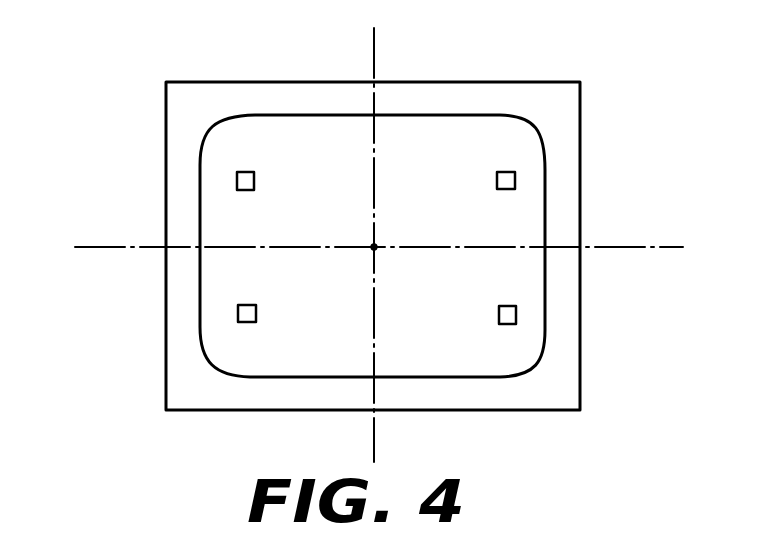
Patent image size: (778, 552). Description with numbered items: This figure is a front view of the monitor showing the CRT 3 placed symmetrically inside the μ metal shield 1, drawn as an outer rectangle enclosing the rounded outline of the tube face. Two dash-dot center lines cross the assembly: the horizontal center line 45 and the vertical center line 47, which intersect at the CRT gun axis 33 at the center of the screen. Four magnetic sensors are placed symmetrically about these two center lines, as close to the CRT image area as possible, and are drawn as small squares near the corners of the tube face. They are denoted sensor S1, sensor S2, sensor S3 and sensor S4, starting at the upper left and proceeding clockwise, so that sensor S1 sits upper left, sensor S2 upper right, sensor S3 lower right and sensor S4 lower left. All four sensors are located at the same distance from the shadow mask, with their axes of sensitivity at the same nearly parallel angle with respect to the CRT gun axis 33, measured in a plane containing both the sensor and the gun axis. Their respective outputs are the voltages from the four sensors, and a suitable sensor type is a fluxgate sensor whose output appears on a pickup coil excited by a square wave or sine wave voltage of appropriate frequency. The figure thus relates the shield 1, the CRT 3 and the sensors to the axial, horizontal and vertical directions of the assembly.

The μ metal shield 1 is at (483, 80).
The CRT 3 is at (510, 221).
The CRT gun axis 33 is at (350, 216).
The horizontal center line 45 is at (123, 251).
The vertical center line 47 is at (375, 58).
The sensor S1 is at (254, 181).
The sensor S2 is at (497, 181).
The sensor S3 is at (499, 315).
The sensor S4 is at (256, 313).